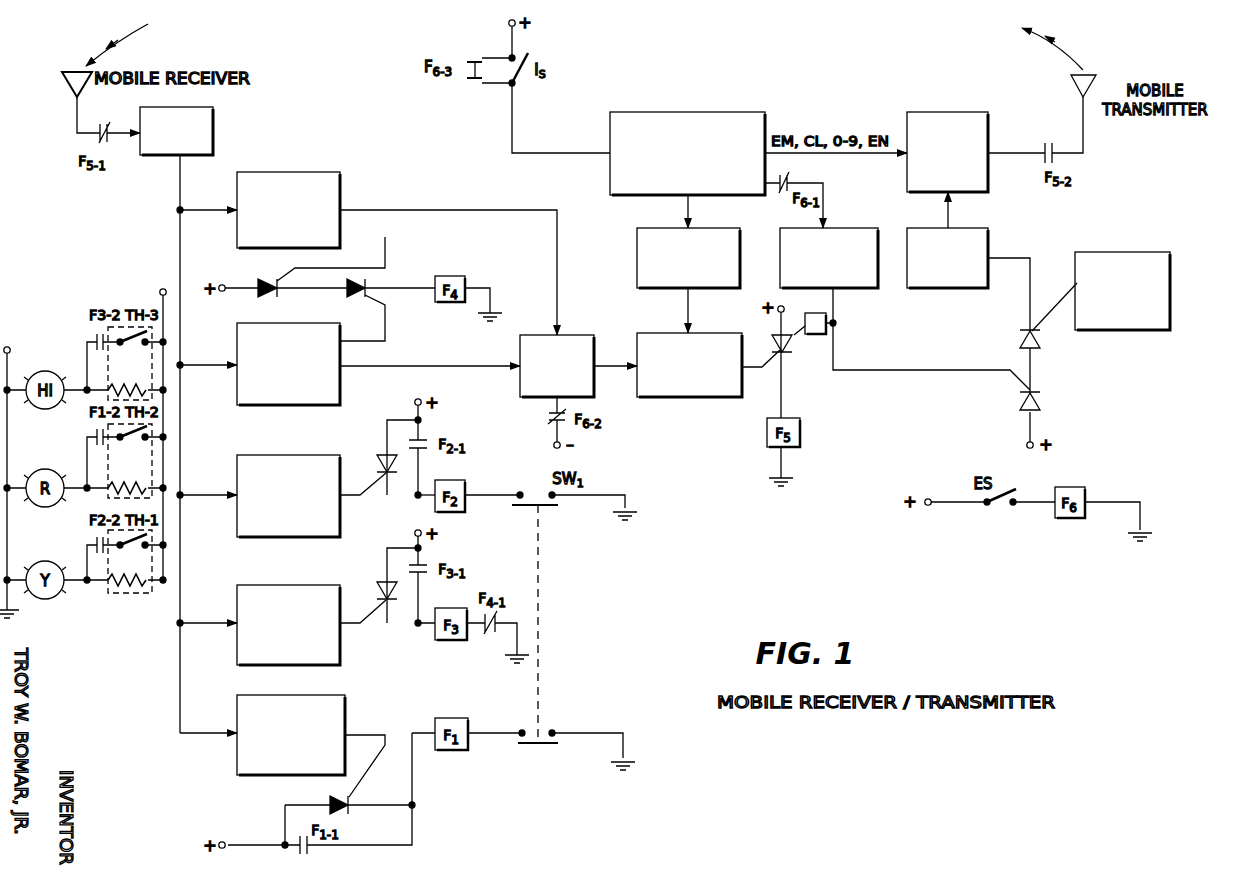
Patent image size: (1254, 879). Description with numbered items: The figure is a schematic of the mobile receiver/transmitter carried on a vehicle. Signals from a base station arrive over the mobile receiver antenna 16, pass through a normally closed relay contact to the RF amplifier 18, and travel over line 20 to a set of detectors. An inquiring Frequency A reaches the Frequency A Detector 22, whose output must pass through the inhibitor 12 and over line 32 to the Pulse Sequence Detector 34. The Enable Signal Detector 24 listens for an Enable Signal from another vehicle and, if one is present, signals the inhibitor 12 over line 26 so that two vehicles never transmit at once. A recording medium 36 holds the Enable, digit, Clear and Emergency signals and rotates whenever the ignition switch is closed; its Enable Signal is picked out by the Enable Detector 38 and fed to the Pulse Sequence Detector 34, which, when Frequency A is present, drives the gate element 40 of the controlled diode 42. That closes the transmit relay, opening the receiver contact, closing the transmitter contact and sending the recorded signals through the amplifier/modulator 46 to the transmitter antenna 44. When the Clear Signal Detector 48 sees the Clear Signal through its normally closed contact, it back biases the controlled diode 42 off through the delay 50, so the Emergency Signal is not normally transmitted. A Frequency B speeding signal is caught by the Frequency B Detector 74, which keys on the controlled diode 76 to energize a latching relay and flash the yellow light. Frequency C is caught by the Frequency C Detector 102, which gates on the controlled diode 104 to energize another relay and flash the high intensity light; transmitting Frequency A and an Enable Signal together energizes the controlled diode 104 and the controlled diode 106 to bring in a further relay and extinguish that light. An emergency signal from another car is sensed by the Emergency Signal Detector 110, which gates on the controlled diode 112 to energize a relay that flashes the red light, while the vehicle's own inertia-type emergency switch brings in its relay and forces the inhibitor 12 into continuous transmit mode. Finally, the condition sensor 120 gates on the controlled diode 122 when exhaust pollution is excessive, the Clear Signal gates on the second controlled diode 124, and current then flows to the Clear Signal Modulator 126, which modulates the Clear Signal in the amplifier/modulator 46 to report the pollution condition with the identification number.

The inhibitor 12 is at (575, 335).
The mobile receiver antenna 16 is at (64, 72).
The RF amplifier 18 is at (213, 112).
The line 20 is at (180, 190).
The Frequency A Detector 22 is at (237, 330).
The Enable Signal Detector 24 is at (340, 186).
The line 26 is at (500, 210).
The line 32 is at (610, 363).
The Pulse Sequence Detector 34 is at (742, 388).
The recording medium 36 is at (748, 112).
The Enable Detector 38 is at (718, 230).
The gate element 40 is at (762, 362).
The controlled diode 42 is at (790, 347).
The transmitter antenna 44 is at (1098, 72).
The amplifier/modulator 46 is at (952, 112).
The Clear Signal Detector 48 is at (857, 228).
The delay 50 is at (826, 334).
The Frequency B Detector 74 is at (237, 455).
The controlled diode 76 is at (381, 455).
The Frequency C Detector 102 is at (316, 585).
The controlled diode 104 is at (262, 279).
The controlled diode 106 is at (347, 296).
The Emergency Signal Detector 110 is at (345, 697).
The controlled diode 112 is at (332, 800).
The condition sensor 120 is at (1122, 252).
The controlled diode 122 is at (1041, 346).
The second controlled diode 124 is at (1041, 408).
The Clear Signal Modulator 126 is at (988, 228).